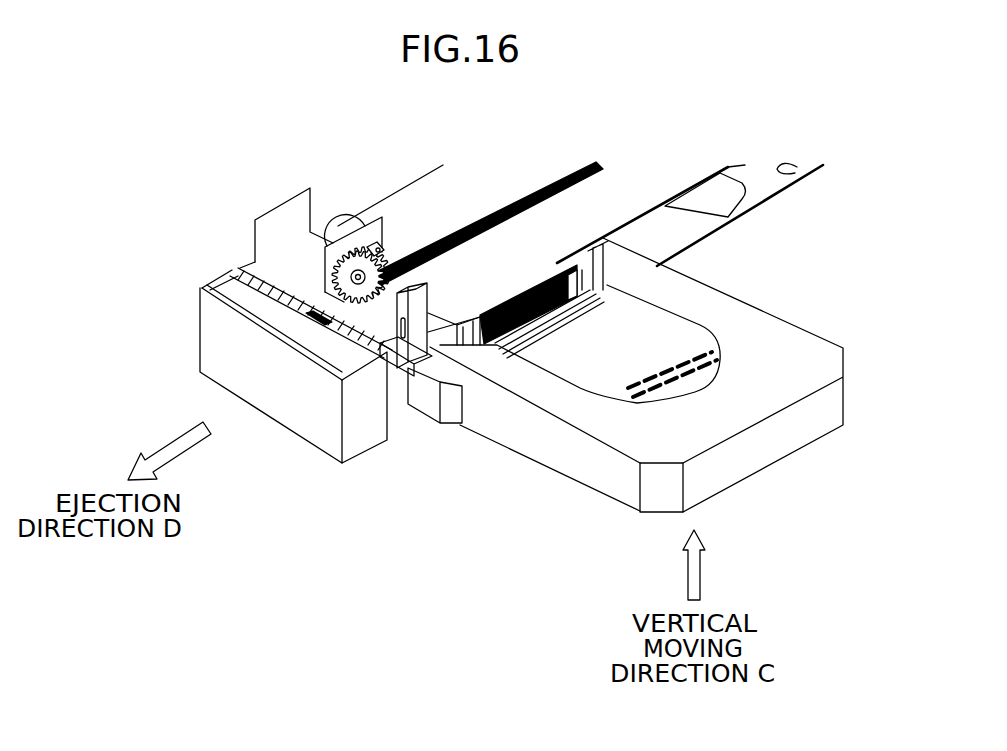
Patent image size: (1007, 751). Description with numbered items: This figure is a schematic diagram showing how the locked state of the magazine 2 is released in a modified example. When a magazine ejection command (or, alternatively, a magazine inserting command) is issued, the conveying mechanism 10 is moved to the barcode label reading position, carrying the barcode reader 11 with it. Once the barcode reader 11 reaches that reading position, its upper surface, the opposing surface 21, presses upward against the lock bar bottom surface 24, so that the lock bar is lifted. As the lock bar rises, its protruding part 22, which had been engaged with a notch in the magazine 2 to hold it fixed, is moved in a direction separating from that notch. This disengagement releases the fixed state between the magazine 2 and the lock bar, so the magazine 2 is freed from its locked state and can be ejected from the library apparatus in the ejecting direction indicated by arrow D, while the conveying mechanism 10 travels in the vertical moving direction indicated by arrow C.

The magazine 2 is at (437, 183).
The conveying mechanism 10 is at (785, 357).
The barcode reader 11 is at (441, 386).
The opposing surface 21 is at (408, 375).
The protruding part 22 is at (345, 378).
The lock bar bottom surface 24 is at (390, 356).